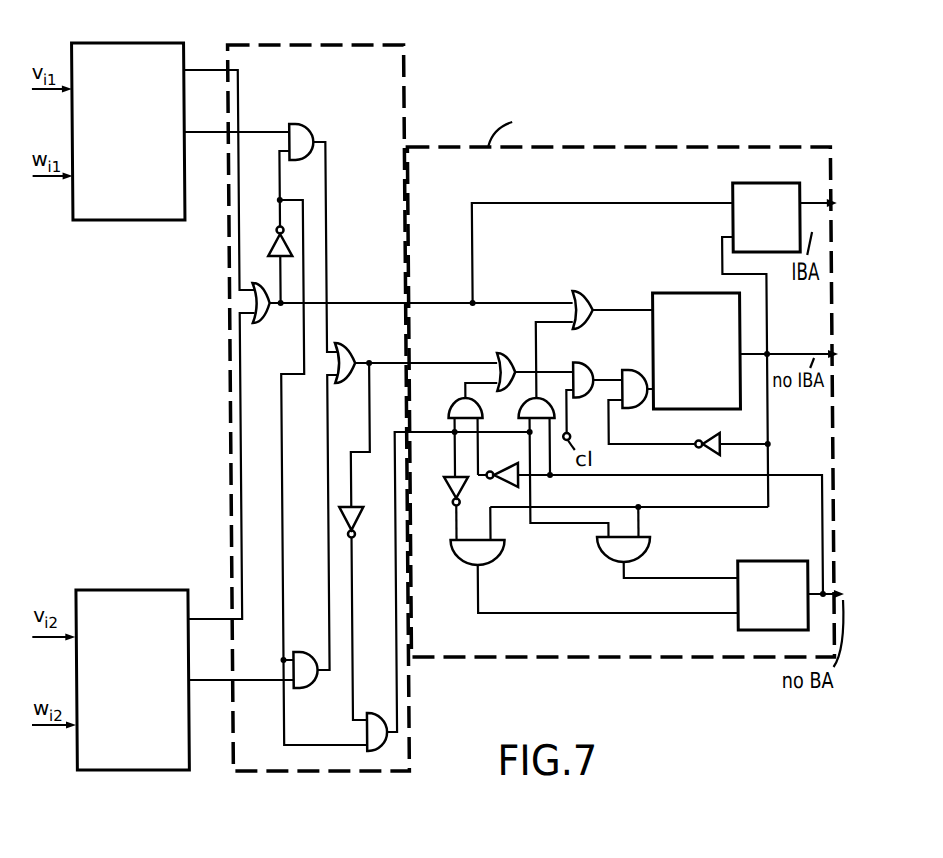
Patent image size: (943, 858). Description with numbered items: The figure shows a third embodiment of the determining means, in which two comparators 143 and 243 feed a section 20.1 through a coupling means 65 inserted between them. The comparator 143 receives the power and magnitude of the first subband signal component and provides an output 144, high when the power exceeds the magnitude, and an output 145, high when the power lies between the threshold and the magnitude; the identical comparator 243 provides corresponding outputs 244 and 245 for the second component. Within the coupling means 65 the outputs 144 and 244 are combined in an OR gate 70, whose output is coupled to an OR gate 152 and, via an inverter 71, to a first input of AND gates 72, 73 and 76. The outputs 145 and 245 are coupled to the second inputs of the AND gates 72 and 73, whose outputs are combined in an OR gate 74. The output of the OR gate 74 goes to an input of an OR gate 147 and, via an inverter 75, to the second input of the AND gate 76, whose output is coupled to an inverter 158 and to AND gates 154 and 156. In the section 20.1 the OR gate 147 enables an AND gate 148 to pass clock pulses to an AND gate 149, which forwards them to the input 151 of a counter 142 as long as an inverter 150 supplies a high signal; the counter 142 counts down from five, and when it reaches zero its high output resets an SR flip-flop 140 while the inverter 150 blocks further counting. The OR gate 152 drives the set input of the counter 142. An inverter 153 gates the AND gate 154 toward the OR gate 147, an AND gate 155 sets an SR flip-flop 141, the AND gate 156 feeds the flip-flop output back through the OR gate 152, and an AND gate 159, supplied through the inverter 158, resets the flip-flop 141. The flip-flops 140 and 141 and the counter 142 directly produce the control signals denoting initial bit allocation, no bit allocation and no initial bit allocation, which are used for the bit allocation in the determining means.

The comparator 143 is at (120, 42).
The output of comparator 144 is at (187, 67).
The output of comparator 145 is at (187, 125).
The comparator 243 is at (119, 590).
The output of comparator 244 is at (188, 615).
The output of comparator 245 is at (185, 677).
The coupling means 65 is at (296, 44).
The OR gate 70 is at (266, 323).
The inverter 71 is at (275, 232).
The AND gate 72 is at (297, 121).
The AND gate 73 is at (297, 650).
The OR gate 74 is at (338, 346).
The inverter 75 is at (354, 512).
The AND gate 76 is at (367, 712).
The section 20.1 is at (478, 660).
The SR flip-flop 140 is at (777, 180).
The SR flip-flop 141 is at (766, 559).
The counter 142 is at (693, 290).
The OR gate 147 is at (496, 353).
The AND gate 148 is at (565, 361).
The AND gate 149 is at (631, 368).
The inverter 150 is at (715, 433).
The input 151 is at (650, 391).
The OR gate 152 is at (590, 290).
The inverter 153 is at (502, 465).
The AND gate 154 is at (451, 399).
The AND gate 155 is at (647, 547).
The AND gate 156 is at (516, 408).
The inverter 158 is at (449, 479).
The AND gate 159 is at (447, 548).